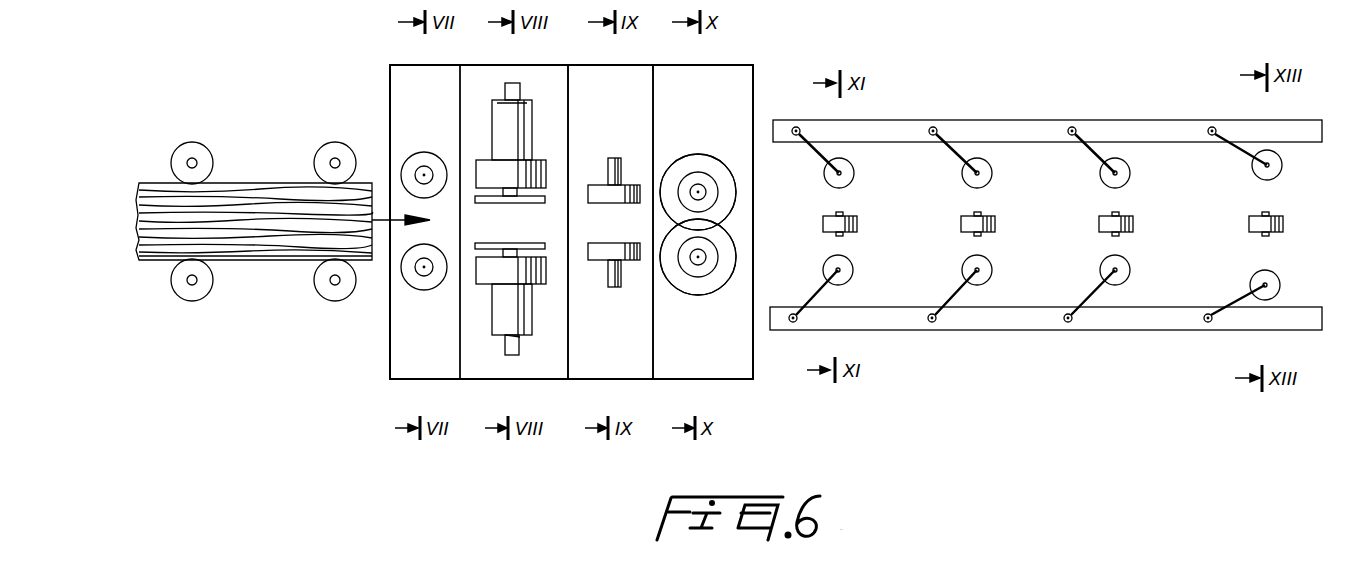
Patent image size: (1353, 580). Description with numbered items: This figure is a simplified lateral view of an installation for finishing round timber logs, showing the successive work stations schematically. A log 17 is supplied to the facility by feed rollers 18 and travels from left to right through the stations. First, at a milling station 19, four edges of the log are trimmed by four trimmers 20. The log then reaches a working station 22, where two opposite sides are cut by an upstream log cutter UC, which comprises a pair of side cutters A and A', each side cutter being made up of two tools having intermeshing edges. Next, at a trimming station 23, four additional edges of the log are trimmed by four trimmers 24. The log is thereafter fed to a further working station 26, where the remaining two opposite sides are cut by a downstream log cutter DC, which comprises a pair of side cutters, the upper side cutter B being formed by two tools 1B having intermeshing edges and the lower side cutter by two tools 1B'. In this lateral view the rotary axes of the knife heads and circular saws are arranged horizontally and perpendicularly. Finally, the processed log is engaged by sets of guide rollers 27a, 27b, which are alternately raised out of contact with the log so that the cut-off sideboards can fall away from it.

The log 17 is at (255, 192).
The feed rollers 18 is at (185, 294).
The milling station 19 is at (398, 93).
The trimmers 20 is at (410, 164).
The working station 22 is at (478, 75).
The trimming station 23 is at (620, 77).
The trimmers 24 is at (600, 190).
The working station 26 is at (740, 74).
The guide rollers 27a is at (853, 176).
The guide rollers 27b is at (858, 229).
The side cutter A is at (536, 138).
The side cutter A' is at (475, 307).
The upstream log cutter UC is at (531, 347).
The side cutter B is at (706, 148).
The tools 1B is at (720, 191).
The tools 1B' is at (692, 290).
The downstream log cutter DC is at (713, 303).